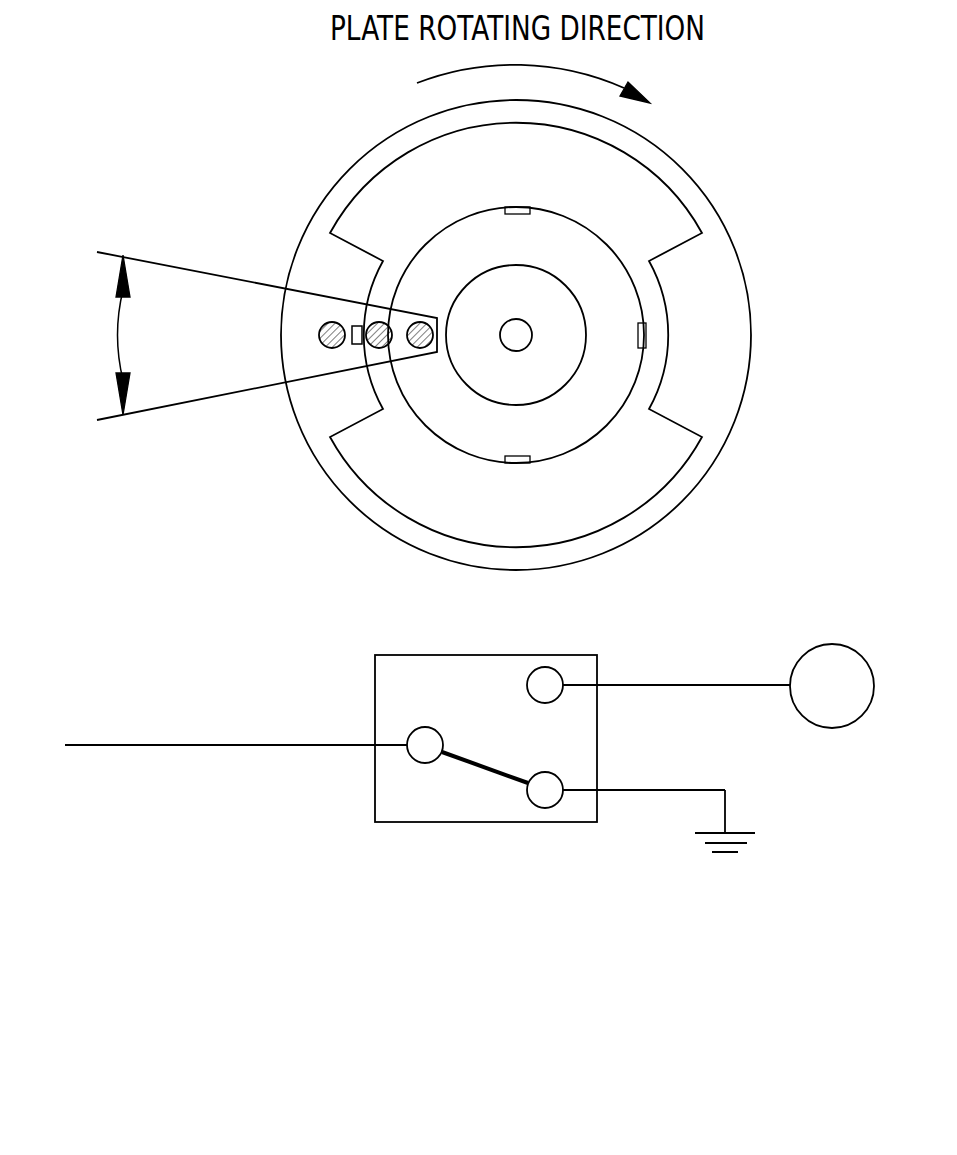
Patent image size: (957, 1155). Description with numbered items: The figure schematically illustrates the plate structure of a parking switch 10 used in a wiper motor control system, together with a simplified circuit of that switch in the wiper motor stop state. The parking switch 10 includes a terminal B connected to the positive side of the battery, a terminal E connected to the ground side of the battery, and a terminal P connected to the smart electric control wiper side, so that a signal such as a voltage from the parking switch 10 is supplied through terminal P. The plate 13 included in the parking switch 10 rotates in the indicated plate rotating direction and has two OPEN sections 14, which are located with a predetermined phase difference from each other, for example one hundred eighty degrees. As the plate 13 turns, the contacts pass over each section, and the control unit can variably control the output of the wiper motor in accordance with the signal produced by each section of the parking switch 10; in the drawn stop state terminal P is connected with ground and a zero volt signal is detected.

The parking switch 10 is at (690, 590).
The plate 13 is at (305, 140).
The OPEN sections 14 is at (375, 393).